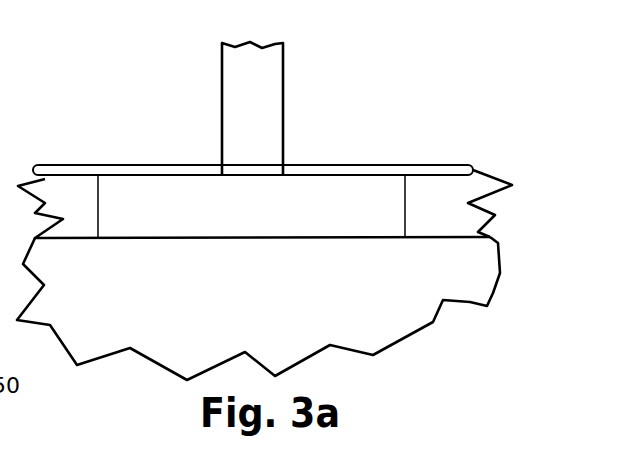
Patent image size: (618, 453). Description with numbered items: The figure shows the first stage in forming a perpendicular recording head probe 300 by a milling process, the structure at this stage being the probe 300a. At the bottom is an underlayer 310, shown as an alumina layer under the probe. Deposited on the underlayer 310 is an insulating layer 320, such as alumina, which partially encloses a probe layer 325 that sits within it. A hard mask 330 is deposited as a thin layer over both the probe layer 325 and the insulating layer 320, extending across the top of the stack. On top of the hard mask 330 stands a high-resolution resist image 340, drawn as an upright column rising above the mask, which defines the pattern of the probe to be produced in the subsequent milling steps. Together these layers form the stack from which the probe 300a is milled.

The perpendicular recording head probe 300 is at (565, 450).
The perpendicular recording head probe 300a is at (402, 107).
The underlayer 310 is at (487, 272).
The insulating layer 320 is at (512, 185).
The probe layer 325 is at (318, 173).
The hard mask 330 is at (465, 168).
The high-resolution resist image 340 is at (285, 83).